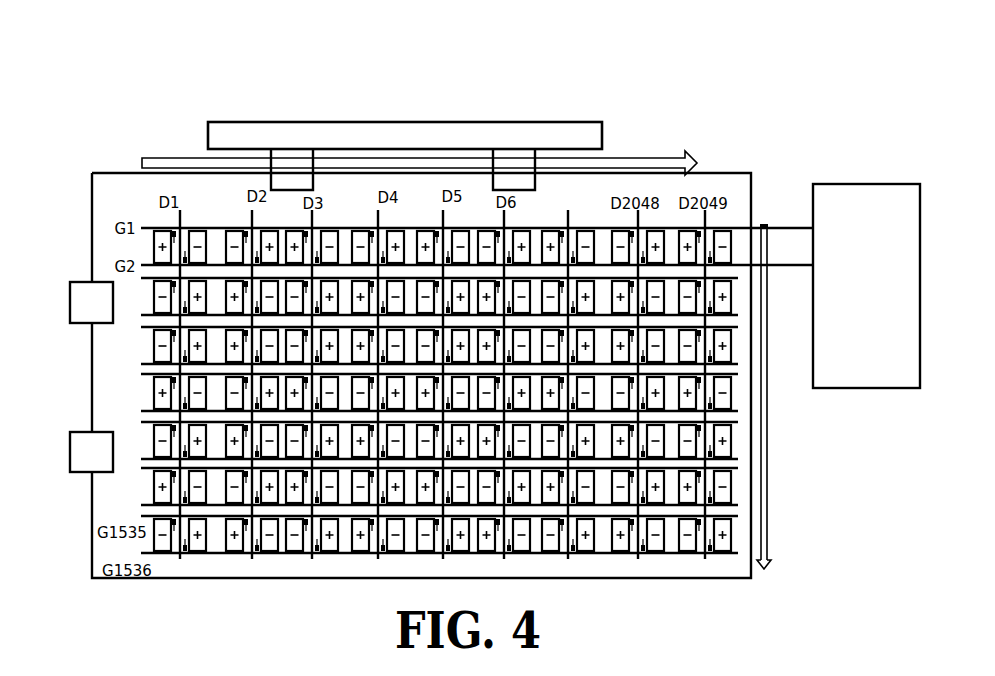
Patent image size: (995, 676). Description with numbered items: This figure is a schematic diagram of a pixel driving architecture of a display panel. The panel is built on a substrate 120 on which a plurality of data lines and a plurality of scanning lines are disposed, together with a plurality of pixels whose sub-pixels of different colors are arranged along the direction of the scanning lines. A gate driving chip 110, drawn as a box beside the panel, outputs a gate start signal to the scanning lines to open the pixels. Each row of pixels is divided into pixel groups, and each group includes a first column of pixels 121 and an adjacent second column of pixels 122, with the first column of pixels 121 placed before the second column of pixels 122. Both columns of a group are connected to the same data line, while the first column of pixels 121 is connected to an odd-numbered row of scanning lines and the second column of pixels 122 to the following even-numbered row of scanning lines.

The gate driving chip 110 is at (867, 214).
The substrate 120 is at (728, 172).
The first column of pixels 121 is at (157, 228).
The second column of pixels 122 is at (193, 230).